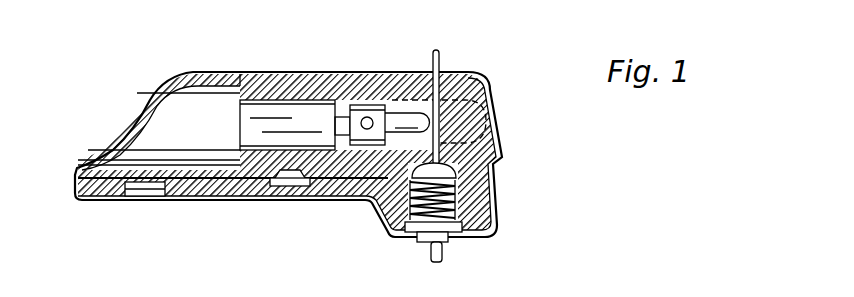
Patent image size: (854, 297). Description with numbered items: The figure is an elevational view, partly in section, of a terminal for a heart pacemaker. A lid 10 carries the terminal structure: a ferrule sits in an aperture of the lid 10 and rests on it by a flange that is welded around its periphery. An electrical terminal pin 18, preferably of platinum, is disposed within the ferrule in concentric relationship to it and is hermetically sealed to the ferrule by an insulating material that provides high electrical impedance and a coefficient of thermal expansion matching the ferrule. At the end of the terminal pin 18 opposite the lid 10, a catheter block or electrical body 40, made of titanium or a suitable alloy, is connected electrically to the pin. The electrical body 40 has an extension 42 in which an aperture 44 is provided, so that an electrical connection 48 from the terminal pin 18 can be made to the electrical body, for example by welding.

The lid 10 is at (497, 202).
The electrical terminal pin 18 is at (441, 64).
The catheter block 40 is at (376, 108).
The extension 42 is at (360, 105).
The aperture 44 is at (366, 129).
The electrical connection 48 is at (495, 104).